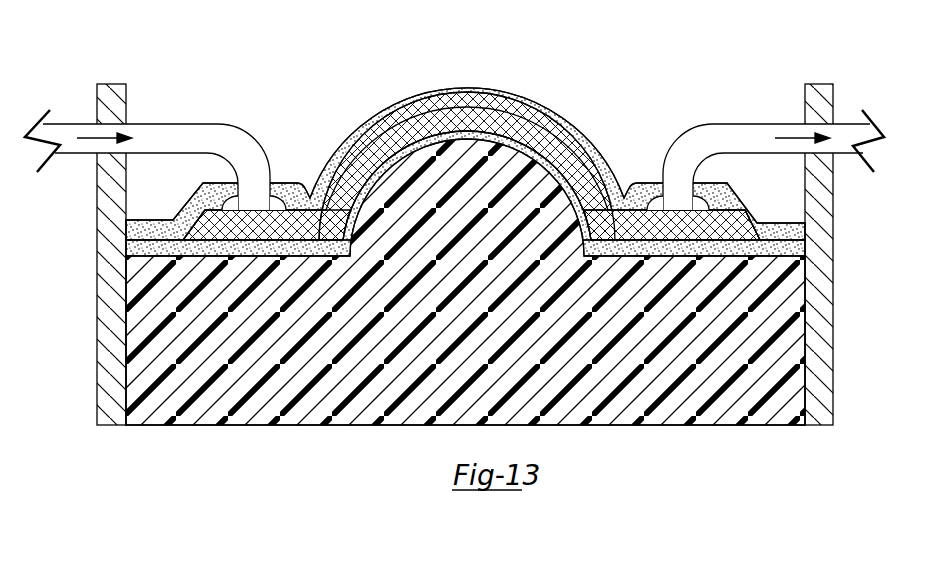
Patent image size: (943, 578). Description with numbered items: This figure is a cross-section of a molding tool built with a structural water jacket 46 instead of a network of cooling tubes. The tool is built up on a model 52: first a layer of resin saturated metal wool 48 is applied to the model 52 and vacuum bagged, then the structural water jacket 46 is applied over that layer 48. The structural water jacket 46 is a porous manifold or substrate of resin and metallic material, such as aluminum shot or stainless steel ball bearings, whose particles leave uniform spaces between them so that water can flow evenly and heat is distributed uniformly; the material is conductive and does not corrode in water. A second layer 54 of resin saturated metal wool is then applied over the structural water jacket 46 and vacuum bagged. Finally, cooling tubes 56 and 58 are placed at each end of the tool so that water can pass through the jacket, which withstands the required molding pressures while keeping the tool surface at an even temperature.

The model 52 is at (250, 473).
The second layer of resin saturated metal wool 54 is at (478, 94).
The structural water jacket 46 is at (527, 140).
The layer of resin saturated metal wool 48 is at (565, 178).
The cooling tube 56 is at (212, 130).
The cooling tube 58 is at (740, 128).